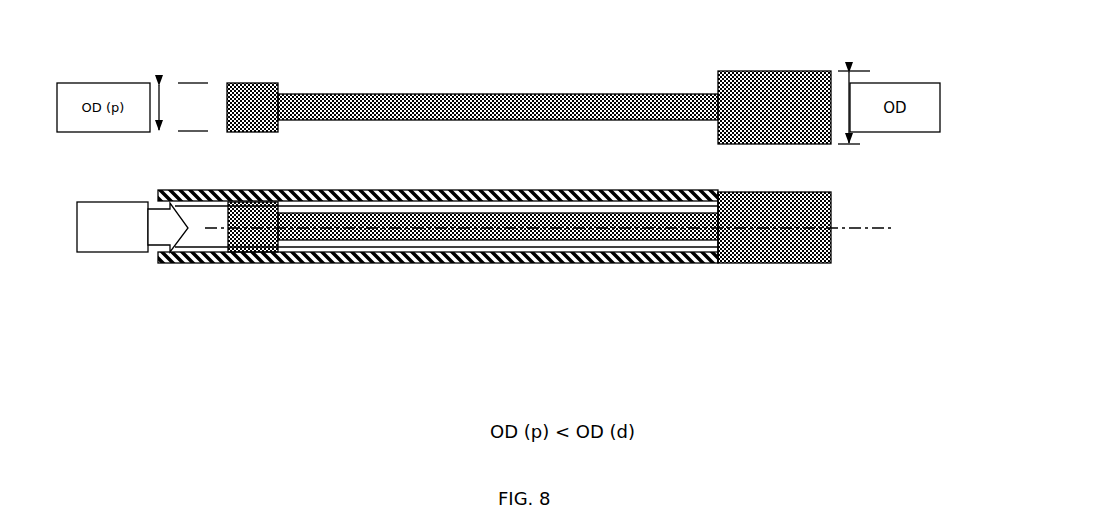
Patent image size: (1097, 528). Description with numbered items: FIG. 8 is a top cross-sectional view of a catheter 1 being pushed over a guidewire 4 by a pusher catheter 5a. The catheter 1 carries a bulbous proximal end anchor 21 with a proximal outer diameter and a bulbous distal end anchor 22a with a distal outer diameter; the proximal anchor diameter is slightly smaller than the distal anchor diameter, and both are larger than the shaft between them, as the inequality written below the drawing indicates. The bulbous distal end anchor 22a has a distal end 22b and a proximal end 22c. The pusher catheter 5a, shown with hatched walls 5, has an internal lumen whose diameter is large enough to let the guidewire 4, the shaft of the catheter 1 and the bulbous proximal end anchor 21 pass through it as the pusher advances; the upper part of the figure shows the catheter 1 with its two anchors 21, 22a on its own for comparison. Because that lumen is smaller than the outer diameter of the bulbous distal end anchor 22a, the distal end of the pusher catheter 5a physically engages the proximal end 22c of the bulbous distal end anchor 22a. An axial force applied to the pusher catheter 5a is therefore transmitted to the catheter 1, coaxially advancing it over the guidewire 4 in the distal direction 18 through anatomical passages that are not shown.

The catheter 1 is at (450, 122).
The guidewire 4 is at (355, 225).
The catheter tube 5 is at (720, 262).
The pusher catheter 5a is at (227, 265).
The distal direction 18 is at (152, 242).
The bulbous proximal end anchor 21 is at (262, 93).
The bulbous distal end anchor 22a is at (780, 82).
The distal end 22b is at (831, 246).
The proximal end 22c is at (722, 247).